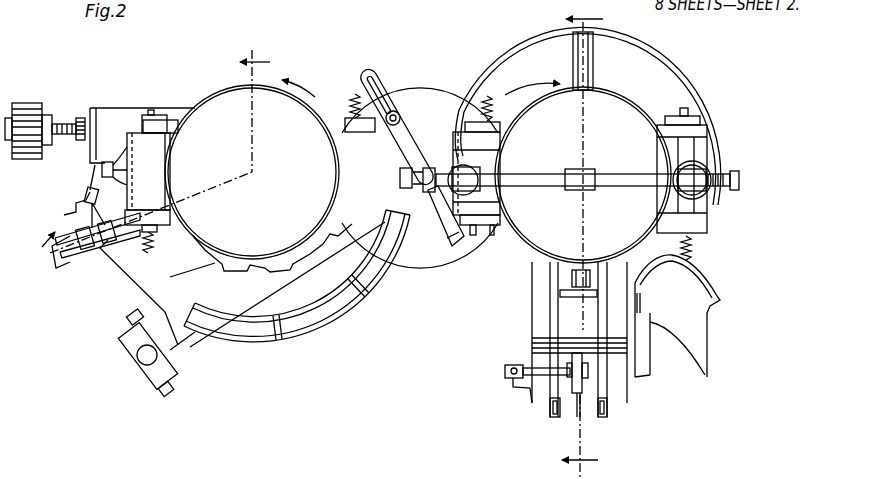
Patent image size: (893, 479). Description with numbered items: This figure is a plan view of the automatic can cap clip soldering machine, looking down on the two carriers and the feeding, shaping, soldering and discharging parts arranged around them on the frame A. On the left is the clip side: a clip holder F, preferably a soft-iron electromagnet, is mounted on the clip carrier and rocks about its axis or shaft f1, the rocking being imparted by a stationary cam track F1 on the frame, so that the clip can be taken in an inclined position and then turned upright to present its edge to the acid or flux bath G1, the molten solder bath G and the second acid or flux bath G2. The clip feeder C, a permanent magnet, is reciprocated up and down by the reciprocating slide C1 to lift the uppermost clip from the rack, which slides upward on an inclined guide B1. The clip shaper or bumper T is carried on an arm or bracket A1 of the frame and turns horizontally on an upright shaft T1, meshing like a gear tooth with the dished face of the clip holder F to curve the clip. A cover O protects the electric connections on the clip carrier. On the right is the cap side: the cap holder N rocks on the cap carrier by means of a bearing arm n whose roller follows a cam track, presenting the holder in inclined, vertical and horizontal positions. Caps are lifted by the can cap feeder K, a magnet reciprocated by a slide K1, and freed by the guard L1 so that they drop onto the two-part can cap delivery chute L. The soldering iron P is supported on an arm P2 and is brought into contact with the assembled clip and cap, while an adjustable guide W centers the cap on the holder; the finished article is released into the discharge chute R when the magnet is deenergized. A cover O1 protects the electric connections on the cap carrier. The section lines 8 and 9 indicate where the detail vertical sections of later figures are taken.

The clip holder F is at (108, 150).
The stationary cam track F1 is at (285, 266).
The axis or shaft f1 is at (150, 252).
The cover O is at (194, 154).
The cover O1 is at (583, 176).
The section line 9- 9 is at (312, 253).
The section line 8- 8 is at (584, 45).
The cap holder N is at (424, 160).
The bearing arm n is at (490, 100).
The soldering iron P is at (724, 170).
The arm P2 is at (523, 176).
The clip feeder C is at (68, 264).
The reciprocating slide C1 is at (72, 206).
The guide B1 is at (98, 256).
The molten solder bath G is at (314, 322).
The acid or flux bath G1 is at (255, 336).
The second acid or flux bath G2 is at (388, 298).
The clip shaper or bumper T is at (170, 392).
The upright shaft T1 is at (145, 358).
The frame A is at (428, 266).
The arm or bracket A1 is at (200, 362).
The adjustable guide W is at (456, 244).
The discharge chute R is at (712, 285).
The can cap delivery device or chute L is at (600, 310).
The guard L1 is at (560, 410).
The can cap feeder K is at (588, 388).
The slide K1 is at (526, 402).